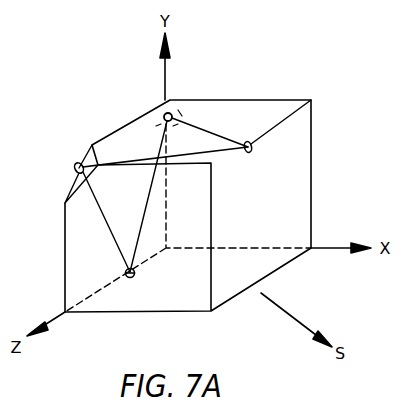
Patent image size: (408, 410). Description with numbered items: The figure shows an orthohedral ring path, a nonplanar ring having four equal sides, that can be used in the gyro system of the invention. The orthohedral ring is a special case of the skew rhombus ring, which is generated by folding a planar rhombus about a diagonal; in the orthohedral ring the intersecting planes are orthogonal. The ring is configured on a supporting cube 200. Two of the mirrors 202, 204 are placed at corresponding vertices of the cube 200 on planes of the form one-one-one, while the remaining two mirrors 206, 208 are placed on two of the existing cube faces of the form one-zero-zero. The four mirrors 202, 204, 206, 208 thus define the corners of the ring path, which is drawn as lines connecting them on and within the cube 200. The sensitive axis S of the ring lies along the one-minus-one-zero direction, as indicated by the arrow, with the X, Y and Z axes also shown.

The cube 200 is at (258, 274).
The mirror 202 is at (75, 167).
The mirror 204 is at (170, 112).
The mirror 206 is at (133, 277).
The mirror 208 is at (251, 152).